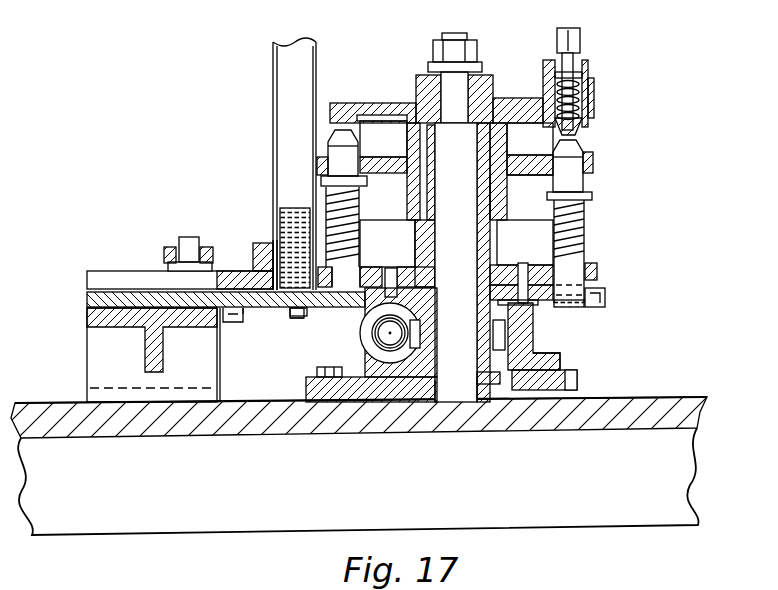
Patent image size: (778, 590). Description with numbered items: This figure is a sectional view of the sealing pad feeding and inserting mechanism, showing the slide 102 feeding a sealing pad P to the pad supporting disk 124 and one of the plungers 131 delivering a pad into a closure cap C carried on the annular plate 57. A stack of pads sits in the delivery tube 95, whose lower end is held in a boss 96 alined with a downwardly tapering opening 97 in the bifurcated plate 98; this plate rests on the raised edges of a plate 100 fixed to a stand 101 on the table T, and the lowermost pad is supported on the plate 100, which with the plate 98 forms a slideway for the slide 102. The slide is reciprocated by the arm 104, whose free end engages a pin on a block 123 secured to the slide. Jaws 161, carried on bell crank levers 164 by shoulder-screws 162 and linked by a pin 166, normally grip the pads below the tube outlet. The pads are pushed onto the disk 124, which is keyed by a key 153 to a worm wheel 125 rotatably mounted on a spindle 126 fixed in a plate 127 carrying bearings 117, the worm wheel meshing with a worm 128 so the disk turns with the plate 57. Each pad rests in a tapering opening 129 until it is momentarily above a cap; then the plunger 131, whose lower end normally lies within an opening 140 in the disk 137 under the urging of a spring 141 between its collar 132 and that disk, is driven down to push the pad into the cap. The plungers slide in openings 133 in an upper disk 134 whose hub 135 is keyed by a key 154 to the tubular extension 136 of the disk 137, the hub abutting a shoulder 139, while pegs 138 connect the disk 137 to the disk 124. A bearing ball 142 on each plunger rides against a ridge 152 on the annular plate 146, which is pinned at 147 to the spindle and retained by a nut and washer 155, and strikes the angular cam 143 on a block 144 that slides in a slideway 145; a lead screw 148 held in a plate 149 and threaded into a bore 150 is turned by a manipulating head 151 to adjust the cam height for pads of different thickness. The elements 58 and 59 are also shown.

The delivery tube 95 is at (288, 100).
The boss 96 is at (274, 248).
The downwardly tapering opening 97 is at (256, 268).
The bifurcated plate 98 is at (119, 279).
The plate 100 is at (90, 300).
The stand 101 is at (97, 353).
The slide 102 is at (291, 313).
The arm 104 is at (168, 247).
The bearings 117 is at (370, 369).
The block 123 is at (189, 237).
The disk 124 is at (374, 306).
The worm wheel 125 is at (500, 338).
The spindle 126 is at (456, 406).
The plate 127 is at (306, 389).
The worm 128 is at (366, 336).
The openings 129 is at (326, 309).
The plungers 131 is at (352, 205).
The annular collar 132 is at (362, 182).
The openings 133 is at (357, 158).
The disk 134 is at (536, 172).
The elongated hub 135 is at (502, 206).
The tubular extension 136 is at (497, 146).
The disk 137 is at (596, 270).
The pegs 138 is at (392, 268).
The shoulder 139 is at (422, 225).
The openings 140 is at (343, 266).
The spring 141 is at (352, 212).
The bearing ball 142 is at (356, 138).
The angular cam 143 is at (580, 128).
The block 144 is at (592, 110).
The vertical slideway 145 is at (585, 75).
The annular plate 146 is at (370, 117).
The pin 147 is at (426, 108).
The lead screw 148 is at (584, 95).
The plate 149 is at (548, 72).
The screw threaded bore 150 is at (549, 105).
The manipulating head 151 is at (573, 44).
The ridge 152 is at (334, 110).
The key 153 is at (428, 299).
The key 154 is at (432, 194).
The nut and washer 155 is at (463, 52).
The jaws 161 is at (349, 277).
The shoulder-screws 162 is at (297, 320).
The bell crank levers 164 is at (265, 312).
The pin 166 is at (232, 323).
The annular plate 57 is at (522, 306).
The step 58 is at (546, 362).
The bolt 59 is at (578, 380).
The sealing pad P is at (278, 215).
The closure cap C is at (582, 305).
The table T is at (645, 398).